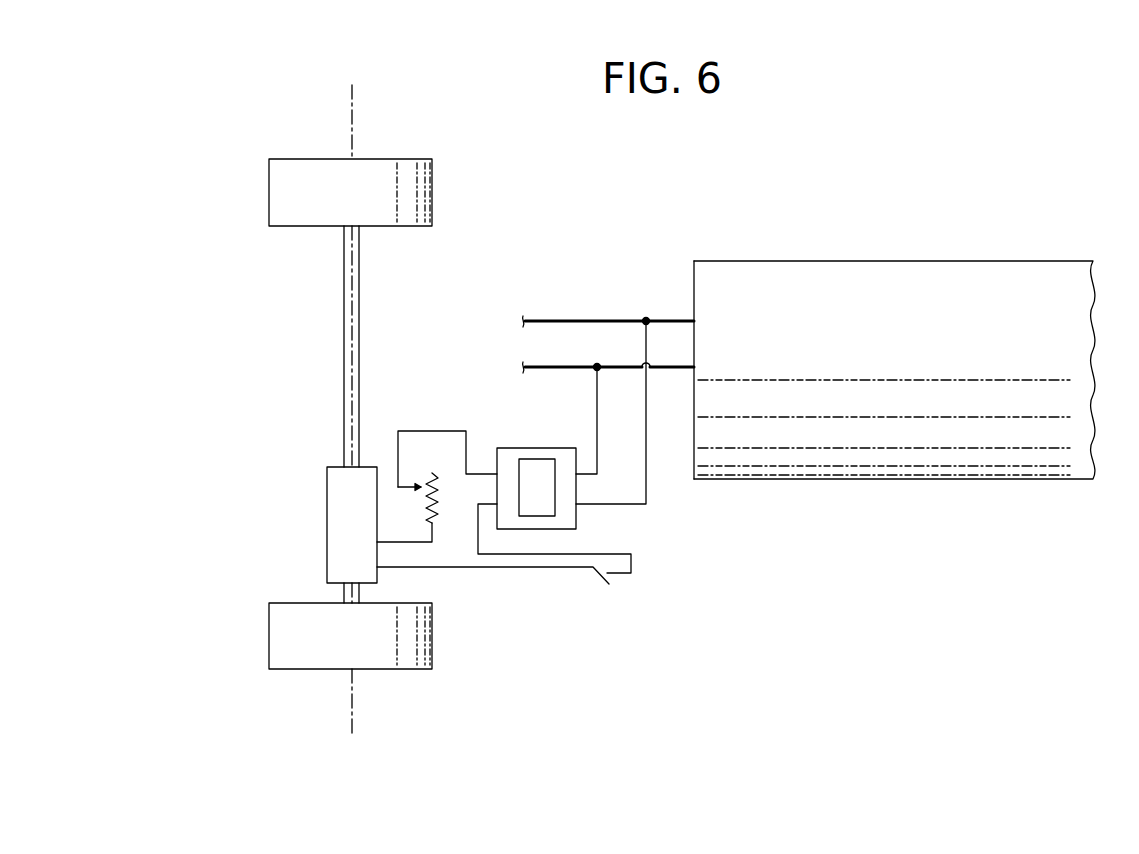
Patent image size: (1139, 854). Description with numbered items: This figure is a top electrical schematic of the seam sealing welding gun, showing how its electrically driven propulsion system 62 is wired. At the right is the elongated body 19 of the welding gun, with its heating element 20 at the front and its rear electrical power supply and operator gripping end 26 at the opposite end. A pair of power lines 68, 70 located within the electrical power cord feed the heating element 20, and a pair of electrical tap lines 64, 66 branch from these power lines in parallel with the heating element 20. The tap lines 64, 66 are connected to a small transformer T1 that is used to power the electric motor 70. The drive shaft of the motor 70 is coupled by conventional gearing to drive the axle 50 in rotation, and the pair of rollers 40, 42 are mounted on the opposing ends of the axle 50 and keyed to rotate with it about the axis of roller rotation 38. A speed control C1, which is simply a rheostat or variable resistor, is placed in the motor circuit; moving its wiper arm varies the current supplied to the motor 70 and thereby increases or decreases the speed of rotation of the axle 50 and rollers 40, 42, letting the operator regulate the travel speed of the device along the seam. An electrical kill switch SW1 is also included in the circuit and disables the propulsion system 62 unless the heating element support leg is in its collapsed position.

The axis of roller rotation 38 is at (352, 102).
The roller 42 is at (288, 197).
The axle 50 is at (347, 343).
The roller 40 is at (288, 636).
The electric motor 70 is at (338, 521).
The speed control C1 is at (393, 478).
The transformer T1 is at (586, 520).
The power line 68 is at (553, 320).
The electrical tap line 64 is at (597, 402).
The electrical tap line 66 is at (646, 490).
The electrical kill switch SW1 is at (617, 588).
The propulsion system 62 is at (686, 580).
The rear electrical power supply and operator gripping end 26 is at (693, 284).
The body 19 is at (992, 283).
The heating element 20 is at (891, 283).